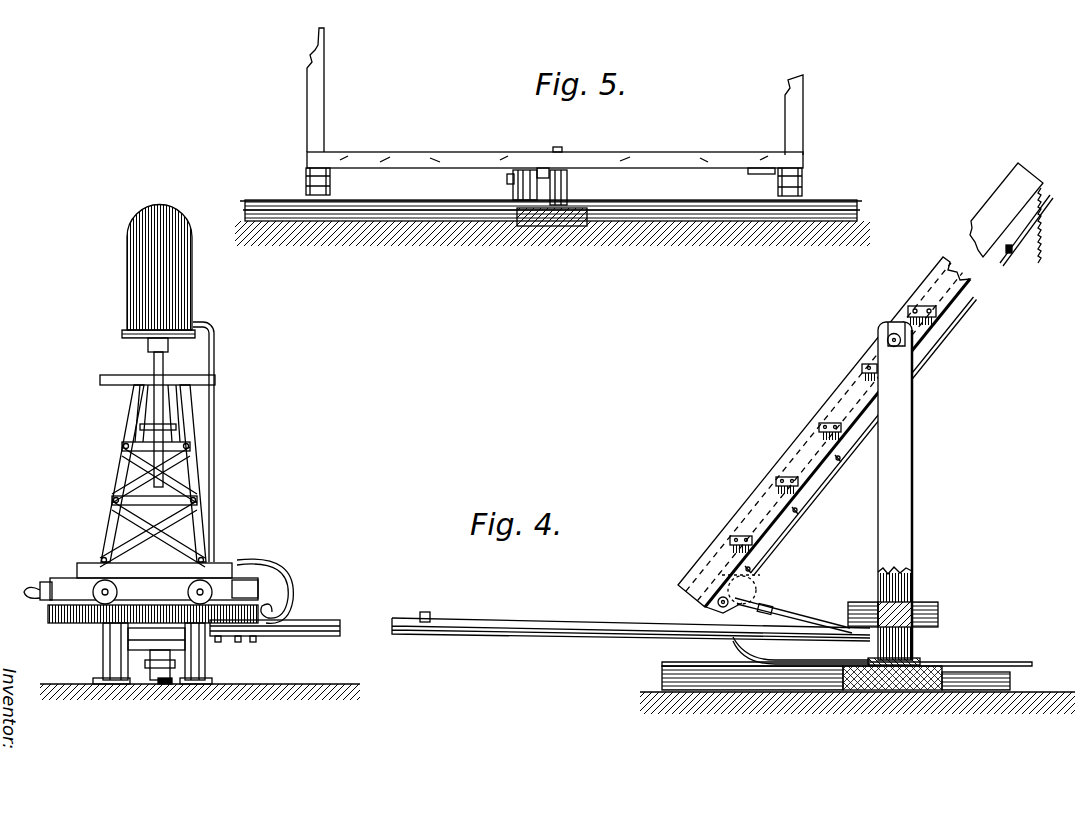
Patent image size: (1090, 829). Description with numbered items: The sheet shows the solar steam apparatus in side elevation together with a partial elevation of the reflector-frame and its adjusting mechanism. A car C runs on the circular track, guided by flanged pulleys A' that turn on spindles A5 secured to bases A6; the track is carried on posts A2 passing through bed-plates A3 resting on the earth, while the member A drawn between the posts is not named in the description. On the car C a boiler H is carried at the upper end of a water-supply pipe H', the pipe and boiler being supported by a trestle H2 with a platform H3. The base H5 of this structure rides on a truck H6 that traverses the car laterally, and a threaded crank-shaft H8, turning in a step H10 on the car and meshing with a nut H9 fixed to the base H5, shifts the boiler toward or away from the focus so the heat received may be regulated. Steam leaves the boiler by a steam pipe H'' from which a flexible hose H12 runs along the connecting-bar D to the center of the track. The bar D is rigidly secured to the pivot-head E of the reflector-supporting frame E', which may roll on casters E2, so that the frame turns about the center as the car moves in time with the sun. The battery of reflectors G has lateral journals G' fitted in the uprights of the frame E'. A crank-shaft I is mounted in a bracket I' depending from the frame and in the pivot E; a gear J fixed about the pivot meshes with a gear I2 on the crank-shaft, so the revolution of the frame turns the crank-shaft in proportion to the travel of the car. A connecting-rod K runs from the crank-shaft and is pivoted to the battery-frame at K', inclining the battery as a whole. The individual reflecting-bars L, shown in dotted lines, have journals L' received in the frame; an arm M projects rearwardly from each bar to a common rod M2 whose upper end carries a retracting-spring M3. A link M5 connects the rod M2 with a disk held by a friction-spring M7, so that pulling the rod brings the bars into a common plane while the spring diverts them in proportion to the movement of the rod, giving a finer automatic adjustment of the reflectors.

In FIG. 5, the pivot-head E is at (555, 98).
In FIG. 4, the pivot-head E is at (906, 491).
In FIG. 5, the reflector-supporting frame E' is at (555, 148).
In FIG. 4, the reflector-supporting frame E' is at (847, 663).
In FIG. 5, the casters E2 is at (803, 187).
In FIG. 5, the friction-spring M7 is at (758, 168).
In FIG. 5, the connecting-rod K is at (528, 153).
In FIG. 4, the connecting-rod K is at (793, 609).
In FIG. 4, the pivotal connection K' is at (691, 599).
In FIG. 5, the crank-shaft I is at (502, 187).
In FIG. 5, the bracket I' is at (480, 180).
In FIG. 5, the cooperating gear I2 is at (515, 202).
In FIG. 5, the gear J is at (568, 196).
In FIG. 4, the gear J is at (920, 662).
In FIG. 4, the boiler H is at (141, 272).
In FIG. 4, the water-supply pipe H' is at (133, 411).
In FIG. 4, the steam pipe H'' is at (225, 442).
In FIG. 4, the stand or trestle H2 is at (122, 437).
In FIG. 4, the platform H3 is at (100, 382).
In FIG. 4, the base H5 is at (172, 576).
In FIG. 4, the truck H6 is at (242, 598).
In FIG. 4, the threaded crank-shaft H8 is at (68, 580).
In FIG. 4, the nut H9 is at (50, 582).
In FIG. 4, the step H10 is at (44, 598).
In FIG. 4, the flexible hose or pipe H12 is at (576, 625).
In FIG. 4, the car C is at (82, 626).
In FIG. 4, the connecting-bar D is at (481, 638).
In FIG. 4, the cross bar A is at (179, 643).
In FIG. 4, the flanged pulleys A' is at (148, 664).
In FIG. 4, the posts A2 is at (206, 666).
In FIG. 4, the bed-plates A3 is at (212, 681).
In FIG. 4, the spindles A5 is at (158, 683).
In FIG. 4, the bases A6 is at (166, 678).
In FIG. 4, the reflecting-bars L is at (824, 432).
In FIG. 4, the journals or gudgeons L' is at (803, 458).
In FIG. 4, the arm M is at (906, 318).
In FIG. 4, the rod M2 is at (814, 496).
In FIG. 4, the retracting-spring M3 is at (1034, 226).
In FIG. 4, the link M5 is at (760, 590).
In FIG. 4, the battery of reflectors G is at (999, 210).
In FIG. 4, the lateral journals G' is at (942, 349).